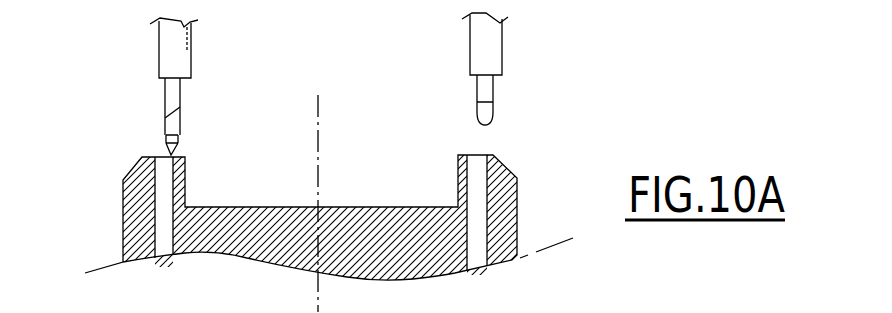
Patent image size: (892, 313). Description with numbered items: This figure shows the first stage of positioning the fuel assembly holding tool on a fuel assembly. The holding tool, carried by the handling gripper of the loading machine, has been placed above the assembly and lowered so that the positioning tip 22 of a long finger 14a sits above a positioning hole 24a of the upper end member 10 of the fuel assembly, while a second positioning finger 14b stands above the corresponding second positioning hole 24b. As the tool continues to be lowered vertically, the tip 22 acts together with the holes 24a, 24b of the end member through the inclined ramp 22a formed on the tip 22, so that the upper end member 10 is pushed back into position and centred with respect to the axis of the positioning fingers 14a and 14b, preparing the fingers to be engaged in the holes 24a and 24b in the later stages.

The upper end member 10 is at (535, 174).
The long finger 14a is at (180, 53).
The positioning finger 14b is at (490, 58).
The positioning tip 22 is at (179, 138).
The inclined ramp 22a is at (180, 118).
The positioning hole 24a is at (165, 213).
The positioning hole 24b is at (495, 221).